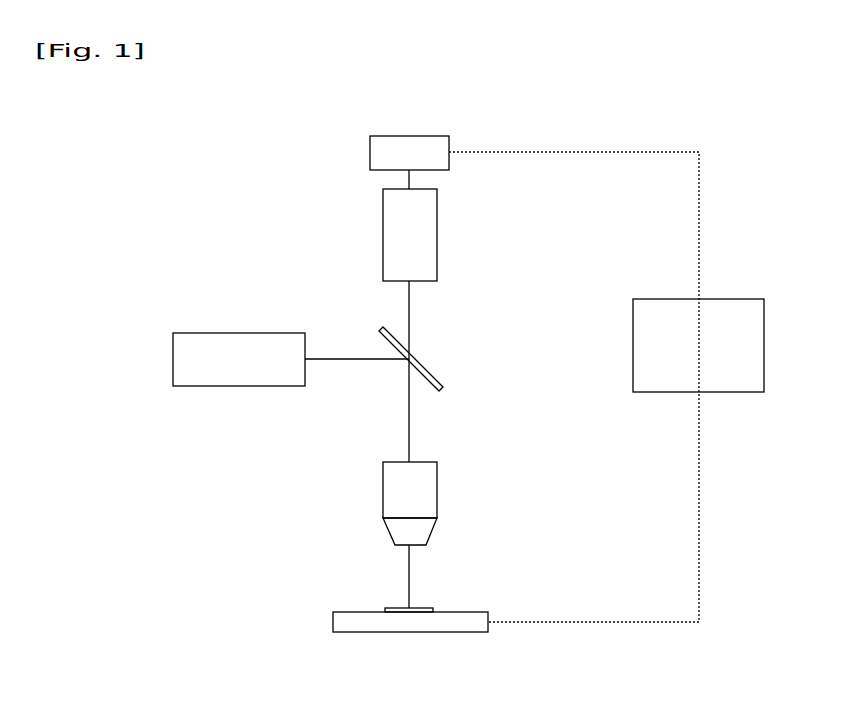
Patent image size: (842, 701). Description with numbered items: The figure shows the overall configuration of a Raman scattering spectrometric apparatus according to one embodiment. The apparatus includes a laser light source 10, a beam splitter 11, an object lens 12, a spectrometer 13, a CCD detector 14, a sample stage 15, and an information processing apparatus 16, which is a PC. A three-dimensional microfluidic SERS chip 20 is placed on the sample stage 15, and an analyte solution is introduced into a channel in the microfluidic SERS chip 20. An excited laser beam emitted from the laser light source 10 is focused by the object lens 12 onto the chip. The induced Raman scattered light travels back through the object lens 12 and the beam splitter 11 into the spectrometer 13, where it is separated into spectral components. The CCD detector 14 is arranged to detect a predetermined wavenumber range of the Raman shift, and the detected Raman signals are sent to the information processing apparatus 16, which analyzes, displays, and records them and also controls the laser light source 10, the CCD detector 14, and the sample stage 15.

The laser light source 10 is at (212, 332).
The beam splitter 11 is at (438, 380).
The object lens 12 is at (437, 463).
The spectrometer 13 is at (437, 220).
The CCD detector 14 is at (428, 135).
The sample stage 15 is at (478, 612).
The information processing apparatus 16 is at (727, 299).
The 3D microfluidic SERS chip 20 is at (425, 606).